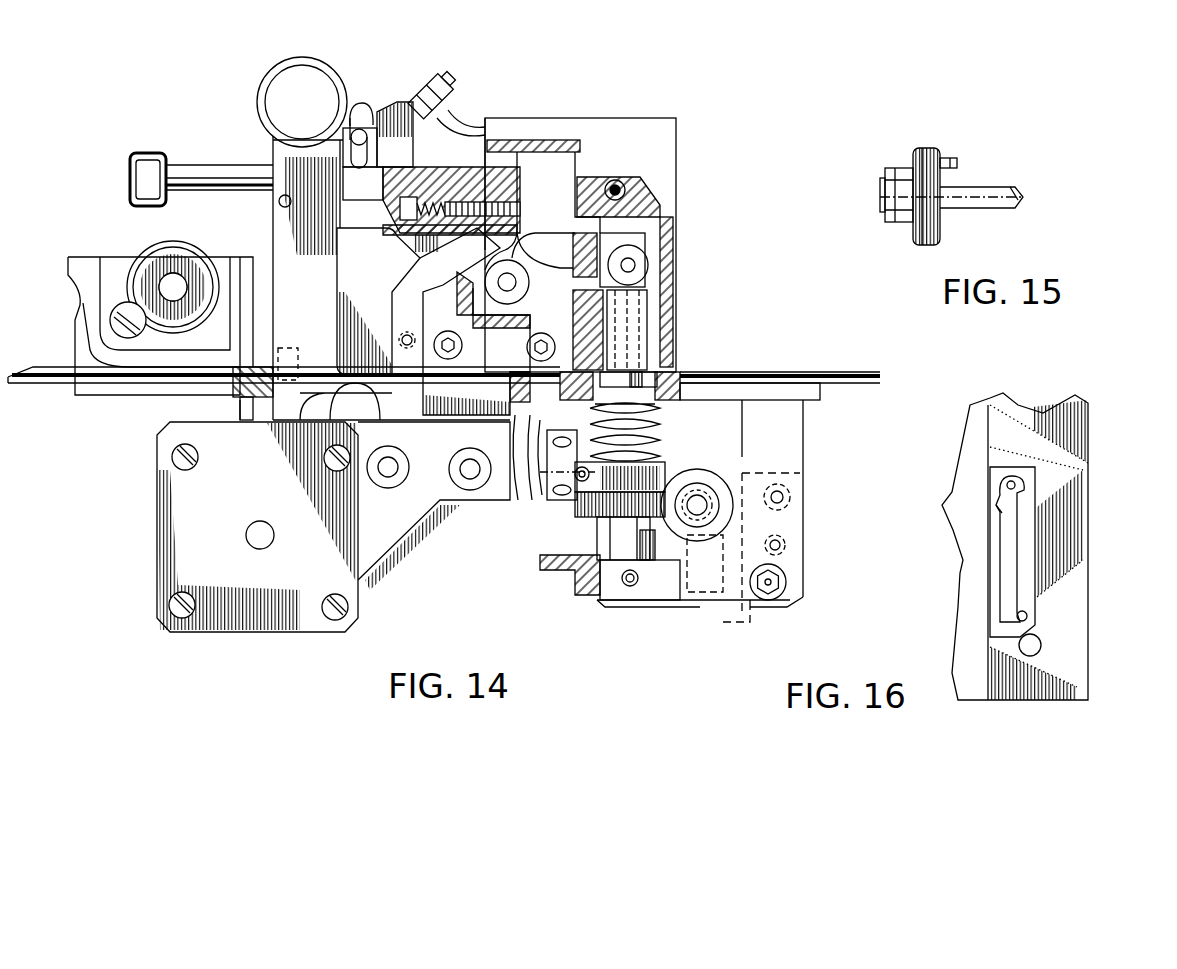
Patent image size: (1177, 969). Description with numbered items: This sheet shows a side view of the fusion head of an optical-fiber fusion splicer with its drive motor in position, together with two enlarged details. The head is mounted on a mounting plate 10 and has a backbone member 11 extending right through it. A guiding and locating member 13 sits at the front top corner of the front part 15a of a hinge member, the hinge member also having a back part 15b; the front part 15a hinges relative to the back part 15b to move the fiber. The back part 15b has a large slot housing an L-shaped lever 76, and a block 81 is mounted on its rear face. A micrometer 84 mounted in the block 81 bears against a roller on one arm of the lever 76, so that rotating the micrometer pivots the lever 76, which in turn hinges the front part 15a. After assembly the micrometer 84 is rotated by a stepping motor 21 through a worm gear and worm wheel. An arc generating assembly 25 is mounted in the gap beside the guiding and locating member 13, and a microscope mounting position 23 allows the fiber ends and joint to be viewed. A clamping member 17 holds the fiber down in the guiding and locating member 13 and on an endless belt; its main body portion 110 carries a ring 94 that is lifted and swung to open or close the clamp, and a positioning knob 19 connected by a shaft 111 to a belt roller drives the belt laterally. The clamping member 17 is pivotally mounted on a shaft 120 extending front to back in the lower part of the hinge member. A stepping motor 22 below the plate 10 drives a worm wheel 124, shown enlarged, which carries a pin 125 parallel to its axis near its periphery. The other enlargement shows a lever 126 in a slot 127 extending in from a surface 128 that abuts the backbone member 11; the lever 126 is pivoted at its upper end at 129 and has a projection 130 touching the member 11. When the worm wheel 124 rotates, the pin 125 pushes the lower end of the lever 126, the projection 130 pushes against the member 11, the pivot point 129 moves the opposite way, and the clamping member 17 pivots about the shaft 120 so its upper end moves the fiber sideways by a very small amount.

In FIG. 14, the mounting plate 10 is at (40, 382).
In FIG. 14, the backbone member 11 is at (270, 283).
In FIG. 16, the backbone member 11 is at (970, 588).
In FIG. 14, the guiding and locating member 13 is at (395, 160).
In FIG. 14, the clamping member 17 is at (348, 128).
In FIG. 14, the positioning knob 19 is at (148, 152).
In FIG. 14, the stepping motor 21 is at (780, 519).
In FIG. 14, the stepping motor 22 is at (320, 560).
In FIG. 14, the microscope mounting position 23 is at (117, 273).
In FIG. 14, the arc generating assembly 25 is at (450, 74).
In FIG. 14, the L-shaped lever 76 is at (550, 263).
In FIG. 14, the block 81 is at (660, 167).
In FIG. 14, the micrometer 84 is at (678, 363).
In FIG. 14, the ring 94 is at (336, 80).
In FIG. 14, the main body portion 110 is at (300, 303).
In FIG. 16, the main body portion 110 is at (1077, 643).
In FIG. 14, the shaft 111 is at (213, 178).
In FIG. 15, the shaft 120 is at (990, 200).
In FIG. 16, the shaft 120 is at (1033, 647).
In FIG. 15, the worm wheel 124 is at (913, 245).
In FIG. 15, the pin 125 is at (952, 158).
In FIG. 16, the pin 125 is at (1027, 617).
In FIG. 16, the lever 126 is at (1007, 553).
In FIG. 14, the slot 127 is at (268, 400).
In FIG. 16, the slot 127 is at (1023, 577).
In FIG. 16, the surface 128 is at (1007, 483).
In FIG. 16, the pivot point 129 is at (1017, 485).
In FIG. 16, the projection 130 is at (997, 512).
In FIG. 14, the front part 15a is at (382, 284).
In FIG. 14, the back part 15b is at (480, 387).